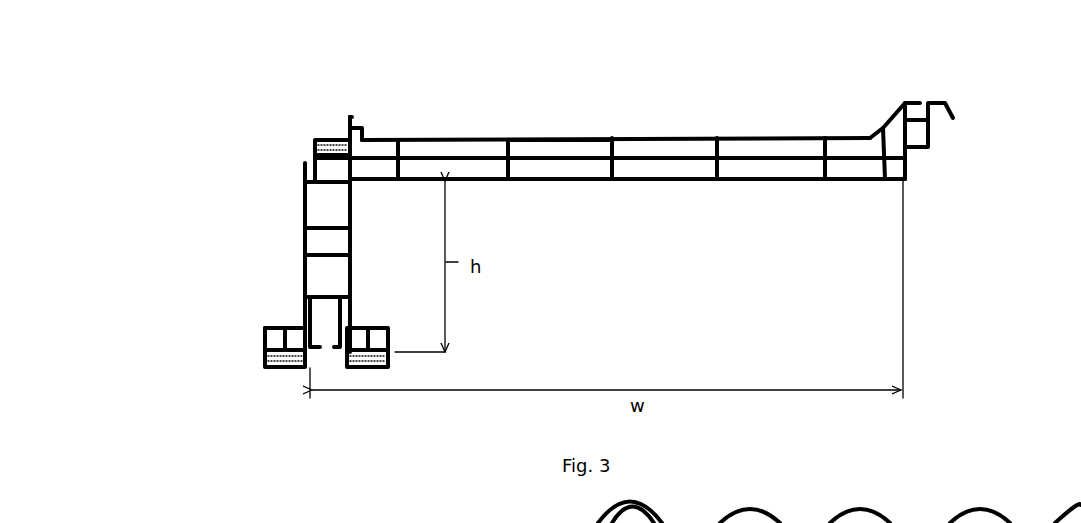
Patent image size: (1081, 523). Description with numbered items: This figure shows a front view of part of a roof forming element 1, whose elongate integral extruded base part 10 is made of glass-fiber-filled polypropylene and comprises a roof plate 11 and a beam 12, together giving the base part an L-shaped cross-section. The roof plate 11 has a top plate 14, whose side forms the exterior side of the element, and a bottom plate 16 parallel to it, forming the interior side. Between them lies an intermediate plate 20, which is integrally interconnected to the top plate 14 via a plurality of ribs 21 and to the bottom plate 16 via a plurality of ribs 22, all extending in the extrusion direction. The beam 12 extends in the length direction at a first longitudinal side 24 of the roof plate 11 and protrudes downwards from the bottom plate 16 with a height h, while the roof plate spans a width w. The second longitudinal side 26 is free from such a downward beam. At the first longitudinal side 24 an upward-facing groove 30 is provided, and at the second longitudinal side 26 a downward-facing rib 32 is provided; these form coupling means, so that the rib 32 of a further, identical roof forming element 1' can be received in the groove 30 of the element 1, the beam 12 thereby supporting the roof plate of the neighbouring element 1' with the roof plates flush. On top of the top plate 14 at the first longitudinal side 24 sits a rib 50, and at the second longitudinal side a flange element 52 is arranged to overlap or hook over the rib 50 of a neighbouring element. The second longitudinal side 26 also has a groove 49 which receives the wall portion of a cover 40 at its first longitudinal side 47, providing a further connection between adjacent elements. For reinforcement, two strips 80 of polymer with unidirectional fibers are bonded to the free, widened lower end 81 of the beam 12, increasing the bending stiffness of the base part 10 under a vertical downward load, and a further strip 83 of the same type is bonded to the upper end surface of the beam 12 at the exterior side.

The roof forming element 1 is at (1015, 412).
The further roof forming element 1' is at (216, 466).
The base part 10 is at (168, 176).
The roof plate 11 is at (655, 215).
The beam 12 is at (255, 263).
The top plate 14 is at (745, 138).
The bottom plate 16 is at (762, 180).
The intermediate plate 20 is at (556, 140).
The ribs 21 is at (510, 140).
The ribs 22 is at (510, 180).
The first longitudinal side 24 is at (306, 110).
The second longitudinal side 26 is at (975, 88).
The groove 30 is at (304, 165).
The rib 32 is at (906, 173).
The cover 40 is at (586, 522).
The first longitudinal side of the cover 47 is at (660, 508).
The groove 49 is at (918, 112).
The rib 50 is at (353, 119).
The flange element 52 is at (955, 118).
The strips 80 is at (280, 368).
The lower end 81 is at (292, 322).
The further strip 83 is at (326, 138).